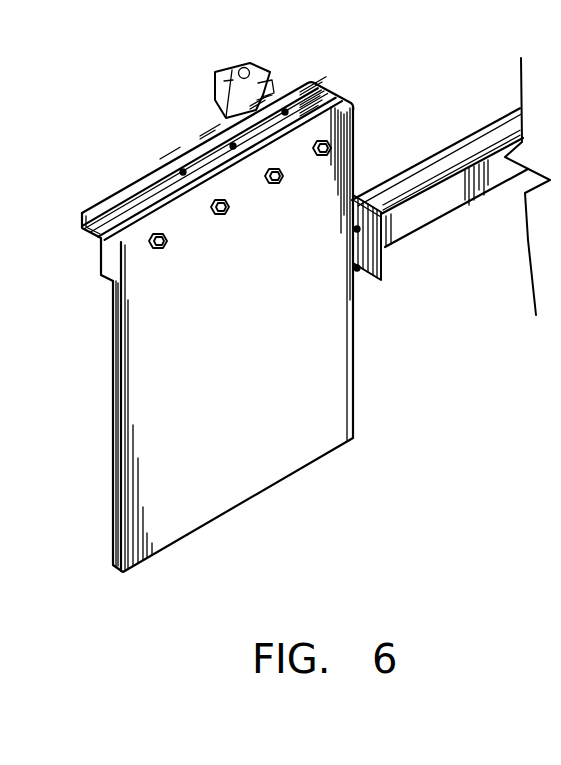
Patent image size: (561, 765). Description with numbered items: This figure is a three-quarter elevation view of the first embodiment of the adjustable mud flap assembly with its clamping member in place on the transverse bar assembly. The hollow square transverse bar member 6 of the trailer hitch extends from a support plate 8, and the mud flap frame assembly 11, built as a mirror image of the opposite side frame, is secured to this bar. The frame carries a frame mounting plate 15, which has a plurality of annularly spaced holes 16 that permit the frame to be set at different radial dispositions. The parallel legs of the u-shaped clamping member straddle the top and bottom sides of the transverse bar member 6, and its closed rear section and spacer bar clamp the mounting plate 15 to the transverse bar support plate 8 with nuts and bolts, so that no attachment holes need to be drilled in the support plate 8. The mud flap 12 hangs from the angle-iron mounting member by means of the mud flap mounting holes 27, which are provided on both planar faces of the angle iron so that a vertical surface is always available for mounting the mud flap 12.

The transverse bar member 6 is at (440, 163).
The transverse bar support plate 8 is at (242, 66).
The right L-shaped mud flap frame assembly 11 is at (197, 163).
The mud flap 12 is at (228, 363).
The frame mounting plate 15 is at (357, 231).
The annularly spaced holes 16 is at (357, 271).
The mud flap mounting holes 27 is at (152, 173).